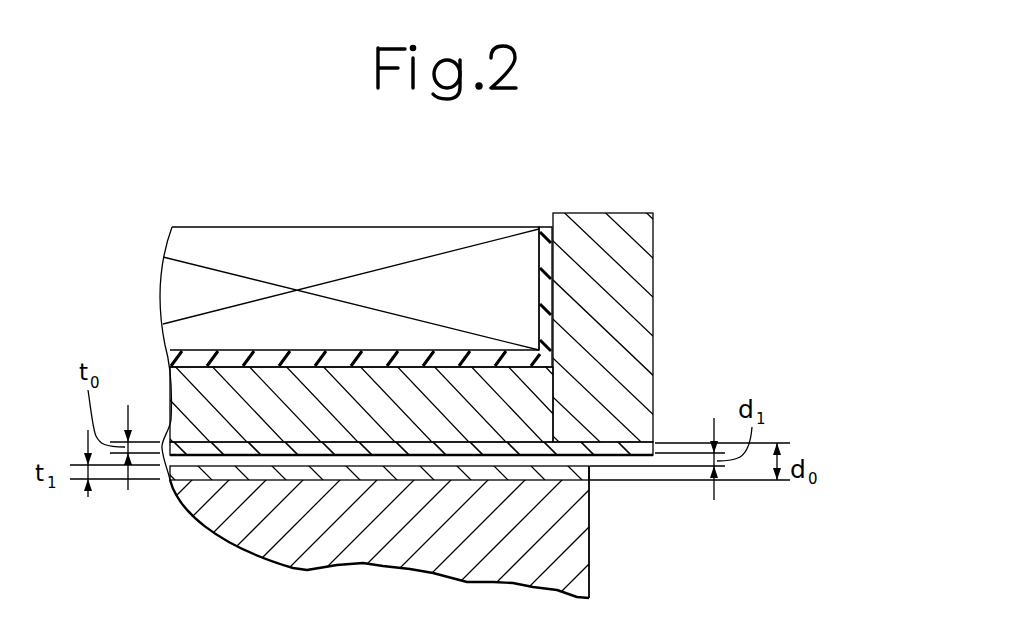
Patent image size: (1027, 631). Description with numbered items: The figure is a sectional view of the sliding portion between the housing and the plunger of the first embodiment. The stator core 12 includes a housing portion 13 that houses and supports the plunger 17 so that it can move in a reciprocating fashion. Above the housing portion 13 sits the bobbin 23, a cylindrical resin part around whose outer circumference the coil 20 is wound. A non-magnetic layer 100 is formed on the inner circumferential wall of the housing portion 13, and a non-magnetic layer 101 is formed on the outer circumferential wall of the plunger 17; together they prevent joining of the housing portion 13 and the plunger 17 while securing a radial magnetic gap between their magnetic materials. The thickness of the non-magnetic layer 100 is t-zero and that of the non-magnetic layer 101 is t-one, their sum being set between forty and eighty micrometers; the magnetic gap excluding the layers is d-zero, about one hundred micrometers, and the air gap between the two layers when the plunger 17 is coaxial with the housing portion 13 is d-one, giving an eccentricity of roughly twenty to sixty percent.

The stator core 12 is at (604, 240).
The housing portion 13 is at (426, 392).
The plunger 17 is at (232, 528).
The coil 20 is at (324, 250).
The bobbin 23 is at (483, 356).
The non-magnetic layer 100 is at (612, 444).
The non-magnetic layer 101 is at (552, 473).